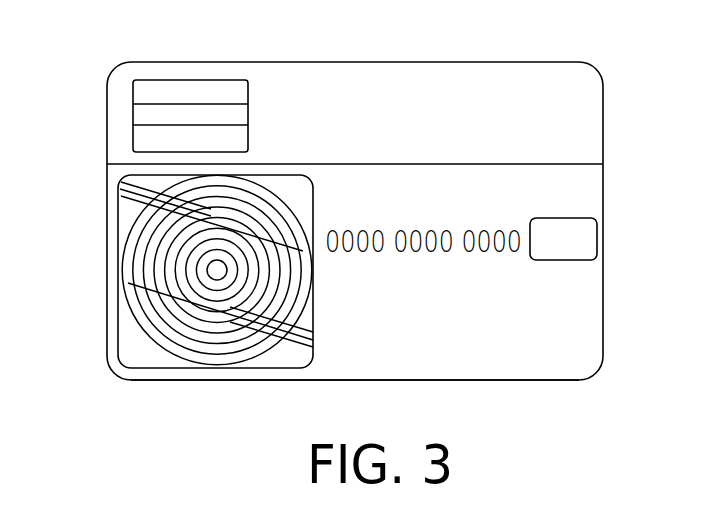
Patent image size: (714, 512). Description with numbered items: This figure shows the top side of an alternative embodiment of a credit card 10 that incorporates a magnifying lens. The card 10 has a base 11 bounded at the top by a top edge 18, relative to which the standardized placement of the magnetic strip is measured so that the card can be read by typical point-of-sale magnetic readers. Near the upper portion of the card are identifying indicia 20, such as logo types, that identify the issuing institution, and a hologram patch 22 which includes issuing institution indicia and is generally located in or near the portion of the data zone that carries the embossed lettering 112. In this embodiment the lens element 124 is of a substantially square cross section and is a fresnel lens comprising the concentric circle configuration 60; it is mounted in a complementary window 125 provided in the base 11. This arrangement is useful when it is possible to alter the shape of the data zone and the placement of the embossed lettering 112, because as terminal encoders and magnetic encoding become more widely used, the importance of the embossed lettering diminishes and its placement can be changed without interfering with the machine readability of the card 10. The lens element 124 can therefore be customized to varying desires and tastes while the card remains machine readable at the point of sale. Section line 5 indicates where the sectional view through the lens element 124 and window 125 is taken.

The credit card 10 is at (568, 53).
The base 11 is at (573, 350).
The top edge 18 is at (458, 62).
The identifying indicia 20 is at (147, 80).
The hologram patch 22 is at (567, 217).
The embossed lettering 112 is at (568, 312).
The window 125 is at (102, 218).
The concentric circle configuration 60 is at (155, 320).
The lens element 124 is at (283, 353).
The section line 5- 5 is at (215, 54).